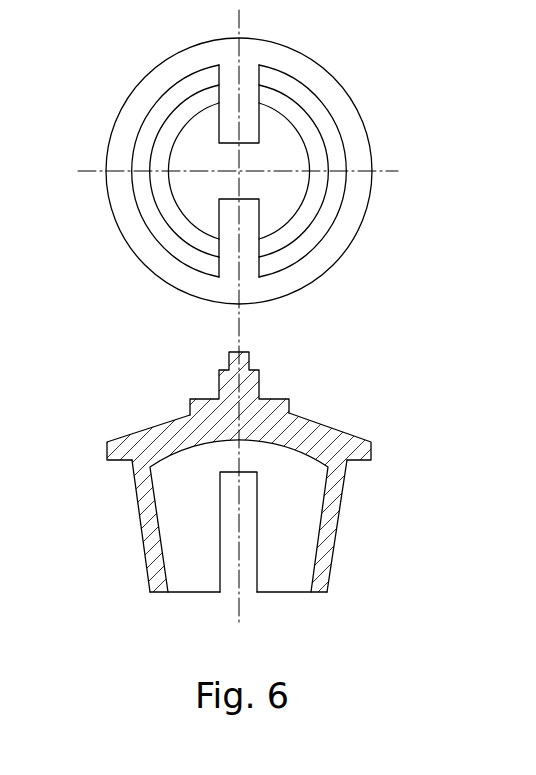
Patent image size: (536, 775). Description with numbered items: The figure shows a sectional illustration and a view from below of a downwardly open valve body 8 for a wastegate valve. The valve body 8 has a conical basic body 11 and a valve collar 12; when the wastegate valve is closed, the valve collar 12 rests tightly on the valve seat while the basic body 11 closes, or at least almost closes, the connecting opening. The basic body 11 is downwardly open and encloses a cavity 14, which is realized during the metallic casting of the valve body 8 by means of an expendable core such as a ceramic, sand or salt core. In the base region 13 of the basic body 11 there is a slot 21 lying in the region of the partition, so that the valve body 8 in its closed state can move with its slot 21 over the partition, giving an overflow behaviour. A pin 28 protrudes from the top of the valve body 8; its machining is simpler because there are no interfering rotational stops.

The valve body 8 is at (376, 100).
The basic body 11 is at (302, 97).
The valve collar 12 is at (344, 222).
The base region 13 is at (190, 599).
The cavity 14 is at (298, 517).
The slot 21 is at (233, 265).
The pin 28 is at (245, 363).